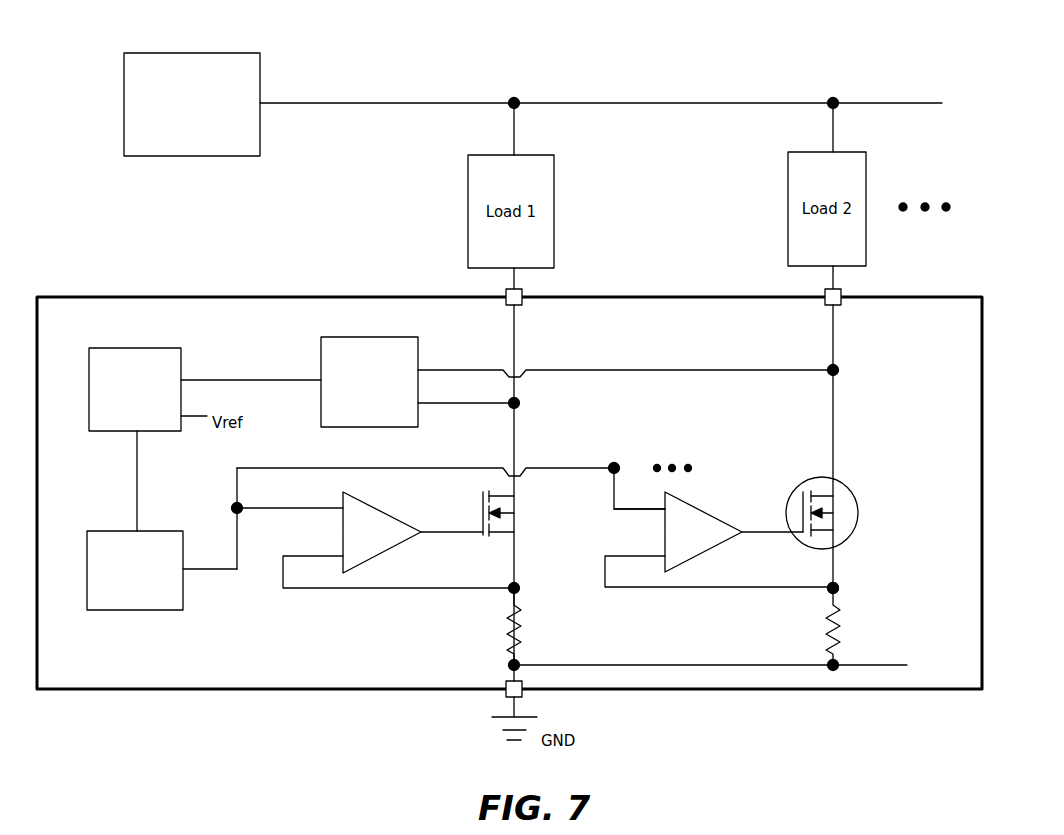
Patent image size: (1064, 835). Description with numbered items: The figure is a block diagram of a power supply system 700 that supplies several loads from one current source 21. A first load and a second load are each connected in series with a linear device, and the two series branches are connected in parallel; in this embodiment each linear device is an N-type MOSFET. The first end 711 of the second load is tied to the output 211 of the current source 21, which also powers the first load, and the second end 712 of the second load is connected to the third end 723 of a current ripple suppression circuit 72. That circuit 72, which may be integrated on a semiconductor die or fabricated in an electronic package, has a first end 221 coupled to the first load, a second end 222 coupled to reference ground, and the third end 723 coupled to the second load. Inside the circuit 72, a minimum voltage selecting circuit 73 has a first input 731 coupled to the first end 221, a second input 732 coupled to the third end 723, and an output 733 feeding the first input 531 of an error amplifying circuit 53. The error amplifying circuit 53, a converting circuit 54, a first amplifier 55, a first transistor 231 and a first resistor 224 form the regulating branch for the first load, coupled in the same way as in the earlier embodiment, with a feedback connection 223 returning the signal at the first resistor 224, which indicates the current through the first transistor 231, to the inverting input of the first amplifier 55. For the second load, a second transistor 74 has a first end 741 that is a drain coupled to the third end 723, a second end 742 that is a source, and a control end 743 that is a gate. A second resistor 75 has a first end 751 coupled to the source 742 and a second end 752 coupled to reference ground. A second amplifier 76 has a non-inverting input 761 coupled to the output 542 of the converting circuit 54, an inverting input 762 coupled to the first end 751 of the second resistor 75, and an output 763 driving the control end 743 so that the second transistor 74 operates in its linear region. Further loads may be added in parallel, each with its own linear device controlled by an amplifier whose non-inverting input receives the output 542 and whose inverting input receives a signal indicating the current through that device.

The power supply system 700 is at (990, 46).
The current source 21 is at (262, 60).
The output of current source 211 is at (262, 104).
The first end of current ripple suppression circuit 221 is at (522, 292).
The second end of current ripple suppression circuit 222 is at (506, 696).
The feedback line 223 is at (378, 557).
The first resistor 224 is at (520, 627).
The transistor 231 is at (518, 513).
The error amplifying circuit 53 is at (137, 348).
The first input of error amplifying circuit 531 is at (196, 380).
The converting circuit 54 is at (90, 531).
The output of converting circuit 542 is at (183, 594).
The first amplifier 55 is at (388, 517).
The first end of load 2 711 is at (836, 150).
The second end of load 2 712 is at (836, 268).
The current ripple suppression circuit 72 is at (982, 375).
The third end of current ripple suppression circuit 723 is at (824, 292).
The minimum voltage selecting circuit 73 is at (321, 346).
The first input of minimum voltage selecting circuit 731 is at (422, 370).
The second input of minimum voltage selecting circuit 732 is at (420, 405).
The output of minimum voltage selecting circuit 733 is at (319, 386).
The second transistor 74 is at (858, 514).
The first end of second transistor 741 is at (835, 490).
The second end of second transistor 742 is at (838, 540).
The control end of second transistor 743 is at (795, 535).
The second resistor 75 is at (856, 632).
The first end of second resistor 751 is at (838, 598).
The second end of second resistor 752 is at (830, 655).
The second amplifier 76 is at (705, 505).
The non-inverting input of second amplifier 761 is at (662, 512).
The inverting input of second amplifier 762 is at (662, 558).
The output of second amplifier 763 is at (745, 535).